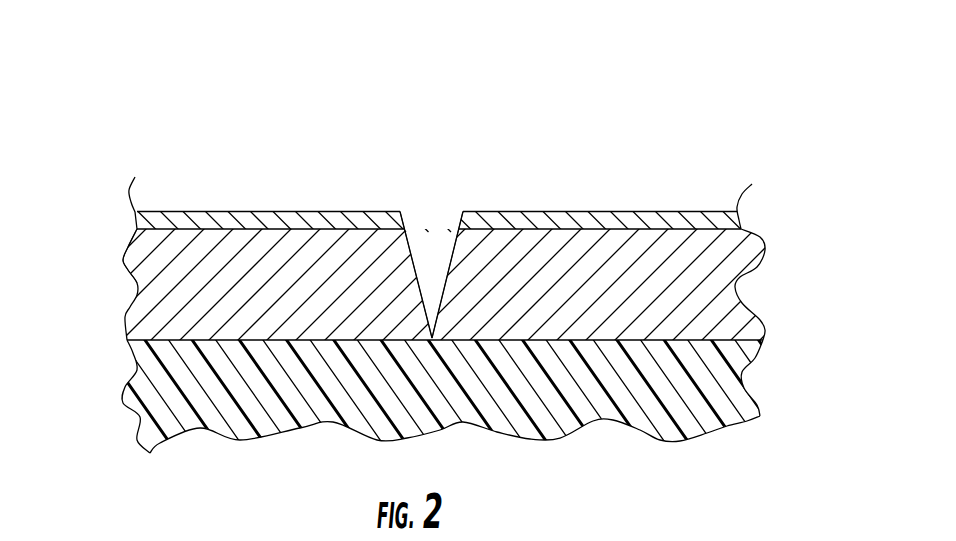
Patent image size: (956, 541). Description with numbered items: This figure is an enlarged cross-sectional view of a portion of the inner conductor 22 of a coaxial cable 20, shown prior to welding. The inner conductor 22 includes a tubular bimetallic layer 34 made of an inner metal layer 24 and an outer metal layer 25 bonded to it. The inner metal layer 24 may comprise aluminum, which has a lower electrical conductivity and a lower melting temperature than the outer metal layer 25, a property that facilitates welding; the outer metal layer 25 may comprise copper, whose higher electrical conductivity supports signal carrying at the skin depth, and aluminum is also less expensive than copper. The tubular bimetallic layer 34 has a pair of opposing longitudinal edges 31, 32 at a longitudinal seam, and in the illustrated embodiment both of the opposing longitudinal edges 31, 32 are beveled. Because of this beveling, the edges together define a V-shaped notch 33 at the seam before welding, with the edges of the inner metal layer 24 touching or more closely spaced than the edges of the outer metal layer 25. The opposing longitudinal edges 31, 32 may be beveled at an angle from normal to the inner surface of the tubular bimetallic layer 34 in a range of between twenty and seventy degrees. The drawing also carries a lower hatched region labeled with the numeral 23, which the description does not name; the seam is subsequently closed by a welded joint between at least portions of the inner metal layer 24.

The coaxial cable 20 is at (608, 128).
The inner conductor 22 is at (722, 198).
The substrate 23 is at (743, 408).
The inner metal layer 24 is at (740, 264).
The outer metal layer 25 is at (732, 220).
The longitudinal edge 31 is at (432, 287).
The longitudinal edge 32 is at (450, 258).
The V-shaped notch 33 is at (447, 270).
The tubular bimetallic layer 34 is at (135, 270).